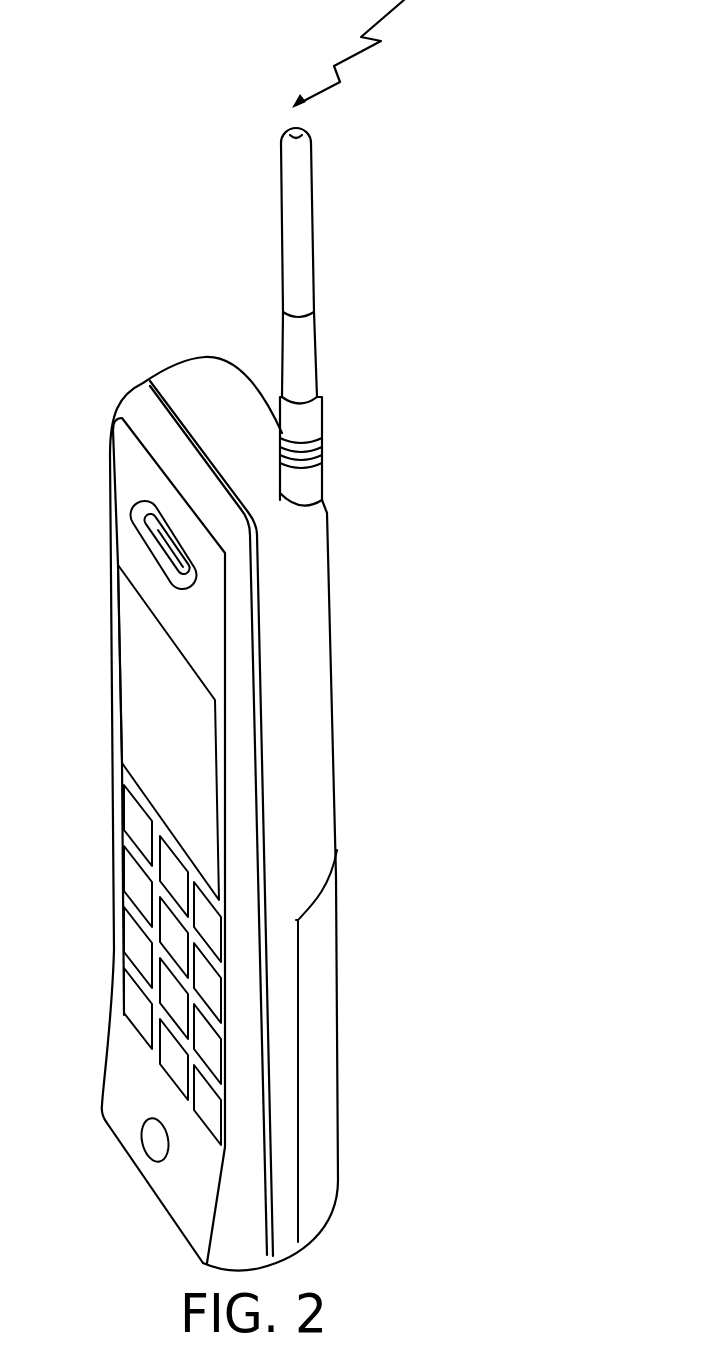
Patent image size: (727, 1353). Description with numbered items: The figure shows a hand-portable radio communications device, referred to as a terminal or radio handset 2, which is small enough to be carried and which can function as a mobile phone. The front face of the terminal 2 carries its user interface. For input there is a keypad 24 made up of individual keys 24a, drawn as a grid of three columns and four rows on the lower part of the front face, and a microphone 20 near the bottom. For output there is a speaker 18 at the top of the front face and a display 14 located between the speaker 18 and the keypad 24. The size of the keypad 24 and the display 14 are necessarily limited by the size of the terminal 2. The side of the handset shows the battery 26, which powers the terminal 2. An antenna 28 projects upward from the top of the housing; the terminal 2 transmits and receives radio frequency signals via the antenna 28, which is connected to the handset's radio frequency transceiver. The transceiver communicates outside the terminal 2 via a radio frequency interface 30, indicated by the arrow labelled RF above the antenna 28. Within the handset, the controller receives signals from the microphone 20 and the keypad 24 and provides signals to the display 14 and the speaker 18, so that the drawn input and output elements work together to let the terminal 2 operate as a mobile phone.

The radio handset 2 is at (95, 402).
The display 14 is at (118, 642).
The speaker 18 is at (150, 518).
The microphone 20 is at (156, 1139).
The keypad 24 is at (216, 965).
The keys 24a is at (163, 853).
The battery 26 is at (320, 1137).
The antenna 28 is at (292, 226).
The radio frequency interface 30 is at (362, 62).